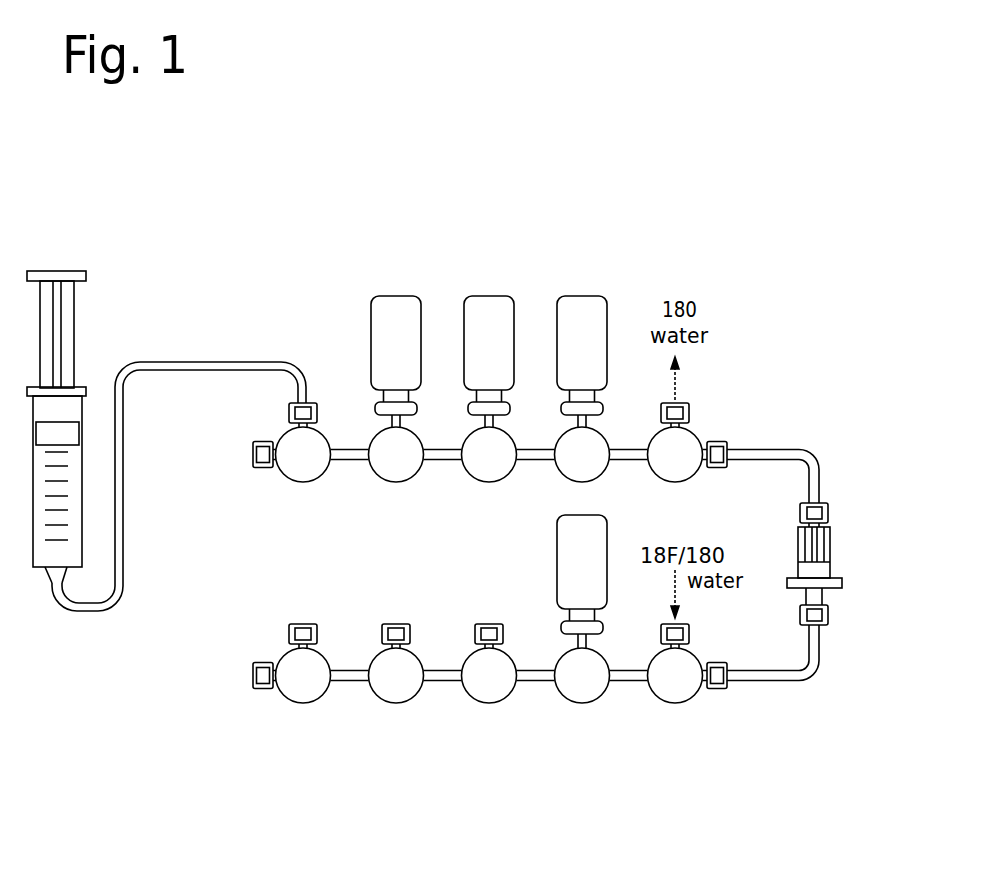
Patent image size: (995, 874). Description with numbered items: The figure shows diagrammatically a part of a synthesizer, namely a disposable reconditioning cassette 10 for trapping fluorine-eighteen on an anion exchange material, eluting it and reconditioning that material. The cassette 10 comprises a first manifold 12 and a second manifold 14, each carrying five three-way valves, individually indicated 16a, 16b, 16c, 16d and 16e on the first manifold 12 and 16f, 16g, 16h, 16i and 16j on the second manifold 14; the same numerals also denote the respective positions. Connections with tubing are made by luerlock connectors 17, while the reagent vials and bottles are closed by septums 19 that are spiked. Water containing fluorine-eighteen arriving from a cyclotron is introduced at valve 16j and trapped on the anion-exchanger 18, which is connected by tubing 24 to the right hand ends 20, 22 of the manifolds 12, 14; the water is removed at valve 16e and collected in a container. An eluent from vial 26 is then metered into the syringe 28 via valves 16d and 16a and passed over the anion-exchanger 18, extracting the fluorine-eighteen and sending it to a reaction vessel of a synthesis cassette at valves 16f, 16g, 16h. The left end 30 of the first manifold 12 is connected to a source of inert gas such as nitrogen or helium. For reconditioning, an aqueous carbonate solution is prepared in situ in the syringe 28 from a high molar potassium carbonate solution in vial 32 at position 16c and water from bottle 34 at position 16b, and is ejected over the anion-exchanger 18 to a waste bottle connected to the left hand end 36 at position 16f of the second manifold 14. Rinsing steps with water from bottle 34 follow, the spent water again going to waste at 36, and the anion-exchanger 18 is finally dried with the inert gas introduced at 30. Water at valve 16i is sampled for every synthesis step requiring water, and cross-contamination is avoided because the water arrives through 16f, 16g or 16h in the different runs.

The cassette 10 is at (778, 338).
The first manifold 12 is at (447, 462).
The second manifold 14 is at (438, 668).
The 3-way valve 16a is at (307, 463).
The 3-way valve 16b is at (400, 463).
The 3-way valve 16c is at (493, 463).
The 3-way valve 16d is at (593, 467).
The 3-way valve 16e is at (679, 465).
The 3-way valve 16f is at (307, 684).
The 3-way valve 16g is at (400, 684).
The 3-way valve 16h is at (493, 684).
The 3-way valve 16i is at (586, 684).
The 3-way valve 16j is at (679, 684).
The luerlock connector 17 is at (685, 414).
The anion-exchanger 18 is at (823, 574).
The septum 19 is at (597, 407).
The right hand end of first manifold 20 is at (722, 447).
The right hand end of second manifold 22 is at (717, 667).
The tubing 24 is at (802, 463).
The vial 26 is at (602, 339).
The syringe 28 is at (50, 562).
The left end of first manifold 30 is at (277, 439).
The vial 32 is at (492, 305).
The bottle 34 is at (390, 312).
The left hand end of second manifold 36 is at (282, 657).